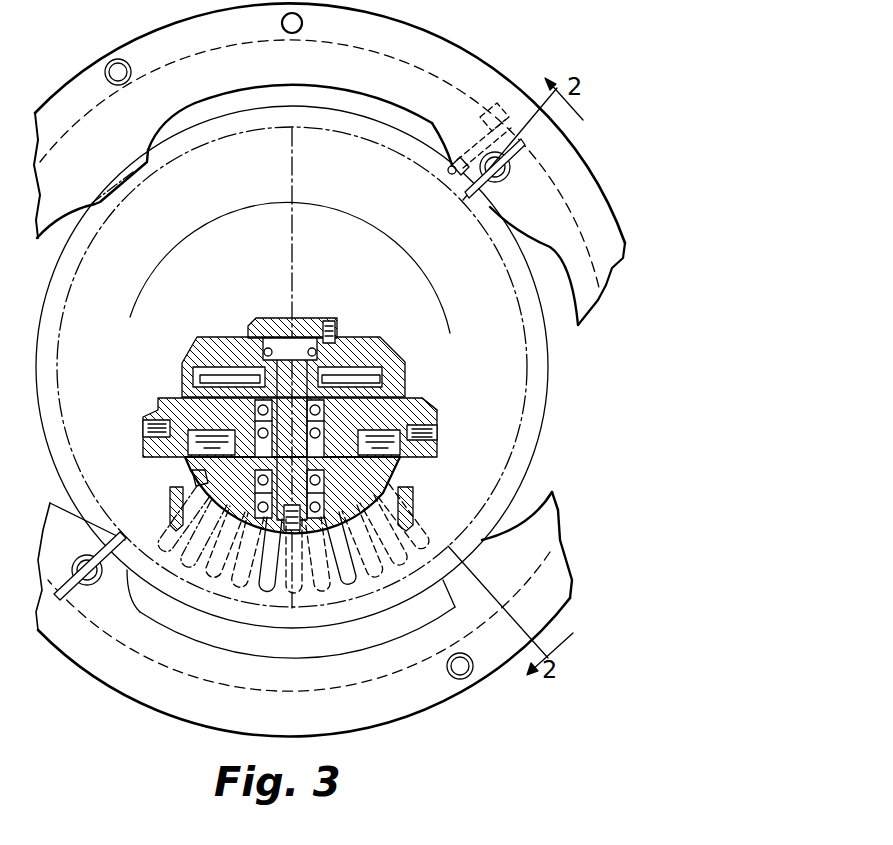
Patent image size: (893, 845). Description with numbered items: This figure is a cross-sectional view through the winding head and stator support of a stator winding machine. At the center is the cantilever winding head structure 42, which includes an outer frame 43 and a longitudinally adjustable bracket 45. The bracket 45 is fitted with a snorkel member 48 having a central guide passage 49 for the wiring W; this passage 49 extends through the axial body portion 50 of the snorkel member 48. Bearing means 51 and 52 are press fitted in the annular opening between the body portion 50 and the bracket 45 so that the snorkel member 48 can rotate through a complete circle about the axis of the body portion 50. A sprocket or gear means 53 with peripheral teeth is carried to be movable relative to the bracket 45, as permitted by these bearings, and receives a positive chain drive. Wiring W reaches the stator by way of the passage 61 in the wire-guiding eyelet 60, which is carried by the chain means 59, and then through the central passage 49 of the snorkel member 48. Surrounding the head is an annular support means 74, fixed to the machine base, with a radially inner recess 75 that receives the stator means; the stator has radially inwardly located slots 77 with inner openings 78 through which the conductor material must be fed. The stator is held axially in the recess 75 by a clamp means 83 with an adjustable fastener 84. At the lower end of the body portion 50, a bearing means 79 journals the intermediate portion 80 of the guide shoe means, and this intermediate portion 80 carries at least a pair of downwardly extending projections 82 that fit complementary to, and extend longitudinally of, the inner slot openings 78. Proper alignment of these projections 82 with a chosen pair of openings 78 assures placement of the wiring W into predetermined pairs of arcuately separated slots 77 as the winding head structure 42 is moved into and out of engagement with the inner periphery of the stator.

The winding head structure 42 is at (425, 400).
The outer frame 43 is at (152, 407).
The bracket 45 is at (270, 352).
The snorkel member 48 is at (297, 347).
The guide passage 49 is at (290, 326).
The axial body portion 50 is at (310, 458).
The bearing means 51 is at (265, 352).
The bearing means 52 is at (257, 408).
The sprocket or gear means 53 is at (217, 377).
The chain means 59 is at (223, 437).
The wire-guiding eyelet 60 is at (195, 479).
The passage 61 is at (177, 491).
The annular support means 74 is at (431, 44).
The radially inner recess 75 is at (150, 613).
The slots 77 is at (230, 567).
The inner openings 78 is at (197, 542).
The bearing means 79 is at (404, 500).
The intermediate portion 80 is at (350, 522).
The projections 82 is at (300, 502).
The clamp means 83 is at (494, 186).
The adjustable fastener 84 is at (516, 150).
The wiring W is at (245, 466).